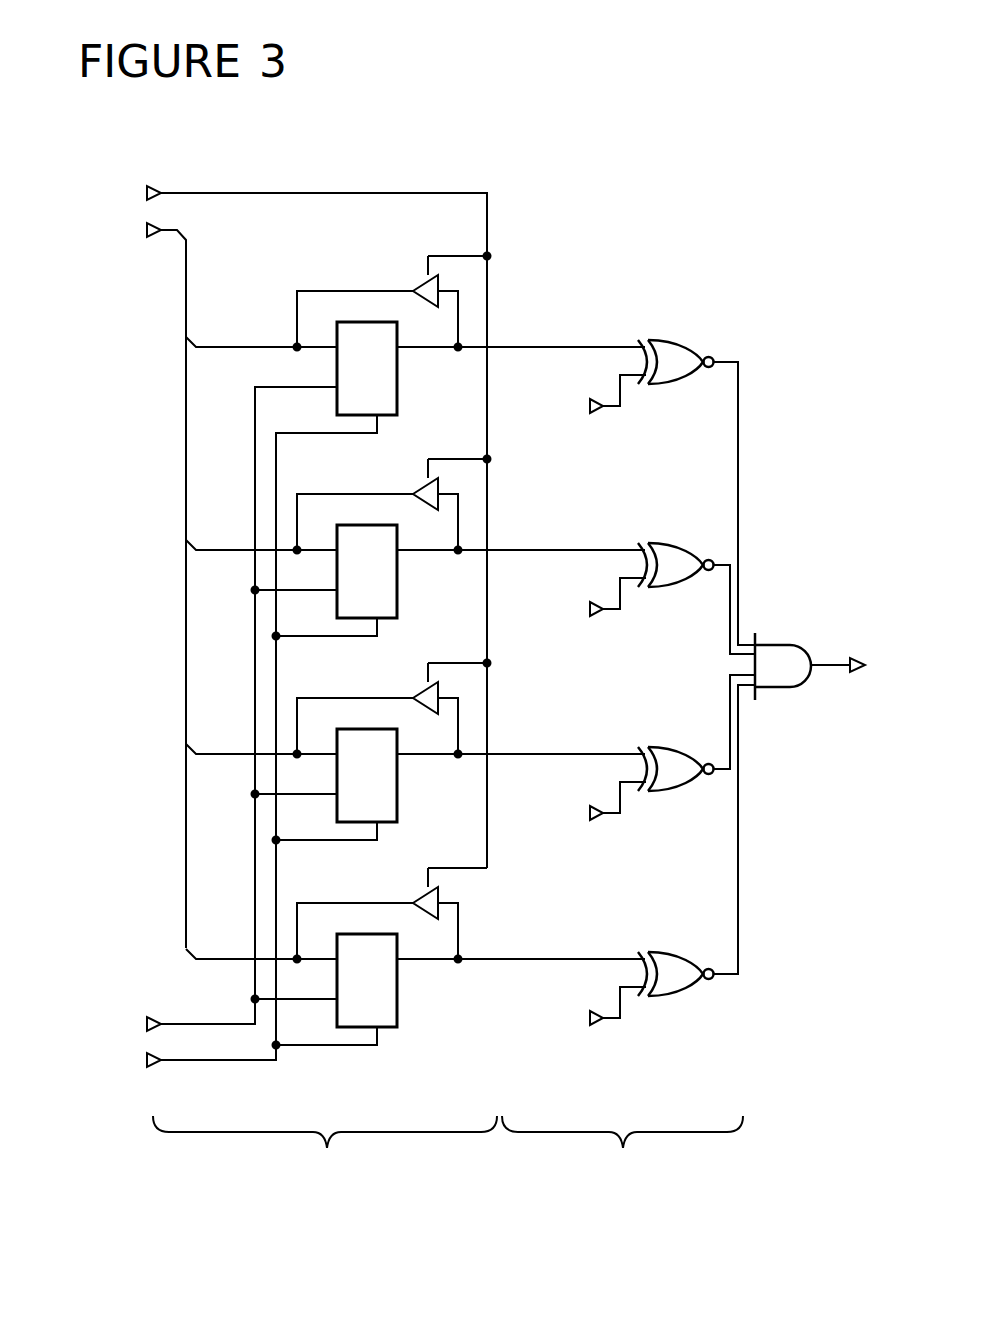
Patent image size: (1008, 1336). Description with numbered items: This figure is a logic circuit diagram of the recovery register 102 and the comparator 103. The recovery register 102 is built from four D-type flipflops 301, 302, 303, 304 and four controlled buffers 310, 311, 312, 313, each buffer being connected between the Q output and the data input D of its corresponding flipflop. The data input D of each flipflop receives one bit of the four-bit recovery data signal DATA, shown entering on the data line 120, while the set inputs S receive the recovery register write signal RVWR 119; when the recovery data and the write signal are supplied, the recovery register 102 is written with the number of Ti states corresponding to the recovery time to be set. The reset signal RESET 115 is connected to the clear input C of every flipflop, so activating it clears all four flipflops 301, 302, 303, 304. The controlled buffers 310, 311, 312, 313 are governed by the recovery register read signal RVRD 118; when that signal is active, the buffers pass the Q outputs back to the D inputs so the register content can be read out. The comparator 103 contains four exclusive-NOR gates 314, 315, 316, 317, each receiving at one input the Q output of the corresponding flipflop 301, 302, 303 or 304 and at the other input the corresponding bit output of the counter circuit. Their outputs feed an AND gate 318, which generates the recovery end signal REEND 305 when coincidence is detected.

The recovery register read signal RVRD 118 is at (212, 179).
The DATA 3-0 data bus 120 is at (187, 265).
The recovery register write signal RVWR 119 is at (205, 1023).
The reset signal RESET 115 is at (204, 1061).
The controlled buffer 310 is at (412, 287).
The controlled buffer 311 is at (412, 490).
The controlled buffer 312 is at (412, 694).
The controlled buffer 313 is at (412, 899).
The D-type flipflop 301 is at (399, 396).
The D-type flipflop 302 is at (399, 599).
The D-type flipflop 303 is at (399, 803).
The D-type flipflop 304 is at (399, 1008).
The exclusive-NOR 314 is at (690, 328).
The exclusive-NOR 315 is at (690, 531).
The exclusive-NOR 316 is at (690, 734).
The exclusive-NOR 317 is at (690, 939).
The AND gate 318 is at (790, 631).
The recovery end signal REEND 305 is at (835, 662).
The recovery register 102 is at (322, 1151).
The comparator 103 is at (632, 1151).